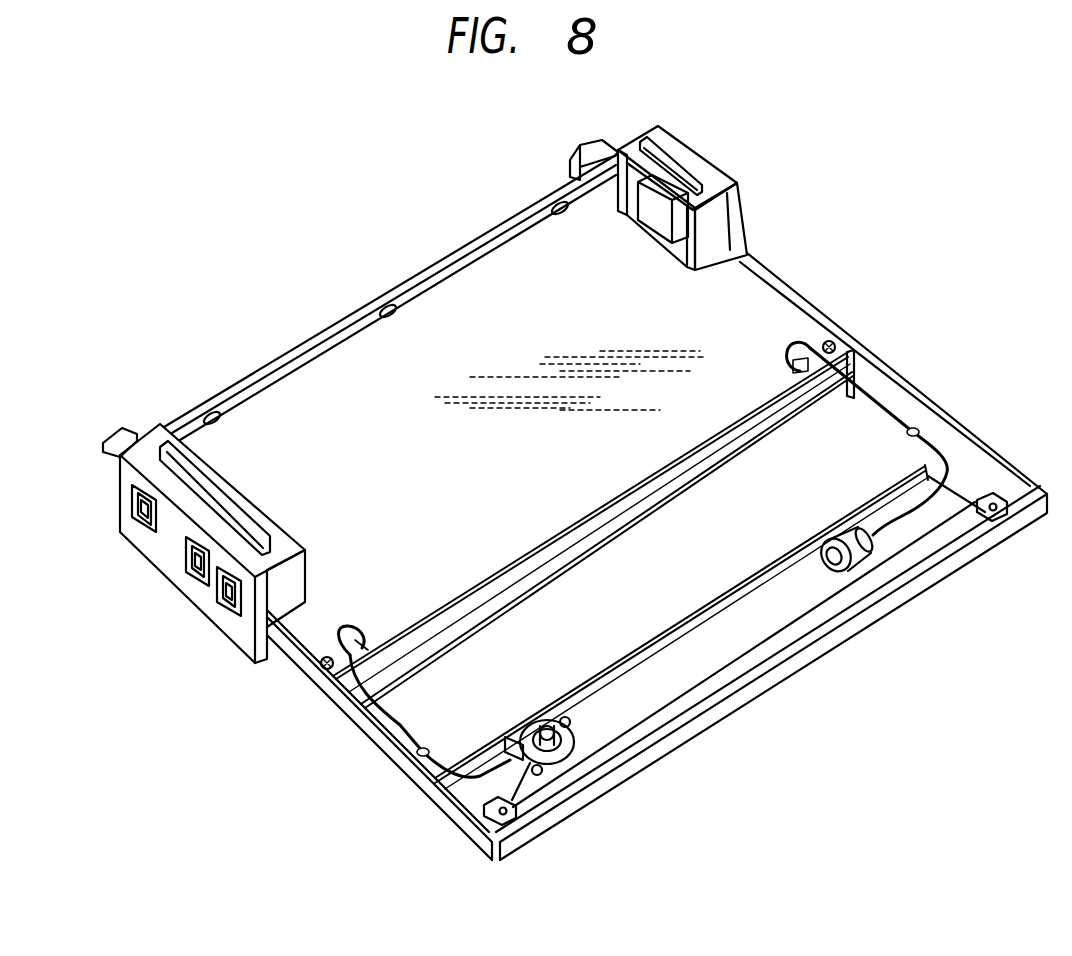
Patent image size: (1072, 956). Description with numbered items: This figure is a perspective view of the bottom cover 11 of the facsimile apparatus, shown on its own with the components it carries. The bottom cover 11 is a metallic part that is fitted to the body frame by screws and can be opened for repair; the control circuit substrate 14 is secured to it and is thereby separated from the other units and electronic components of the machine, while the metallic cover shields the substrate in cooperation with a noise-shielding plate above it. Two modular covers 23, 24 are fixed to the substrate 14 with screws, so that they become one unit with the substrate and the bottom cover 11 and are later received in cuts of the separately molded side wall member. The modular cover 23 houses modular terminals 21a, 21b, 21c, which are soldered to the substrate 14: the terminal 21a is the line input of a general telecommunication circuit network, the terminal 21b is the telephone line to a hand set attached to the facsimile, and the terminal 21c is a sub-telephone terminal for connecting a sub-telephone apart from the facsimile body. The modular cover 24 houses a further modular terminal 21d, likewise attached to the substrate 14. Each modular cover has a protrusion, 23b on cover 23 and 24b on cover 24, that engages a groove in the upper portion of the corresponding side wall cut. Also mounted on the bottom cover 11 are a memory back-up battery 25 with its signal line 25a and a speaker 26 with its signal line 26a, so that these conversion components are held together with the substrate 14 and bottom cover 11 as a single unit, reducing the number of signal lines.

The bottom cover 11 is at (686, 593).
The control circuit substrate 14 is at (318, 367).
The modular terminal 21a is at (135, 527).
The modular terminal 21b is at (196, 580).
The modular terminal 21c is at (225, 607).
The modular terminal 21d is at (658, 202).
The modular cover 23 is at (175, 545).
The protrusion 23b is at (224, 497).
The modular cover 24 is at (682, 178).
The protrusion 24b is at (632, 150).
The memory back-up battery 25 is at (873, 540).
The signal line 25a is at (873, 397).
The speaker 26 is at (580, 747).
The signal line 26a is at (367, 733).